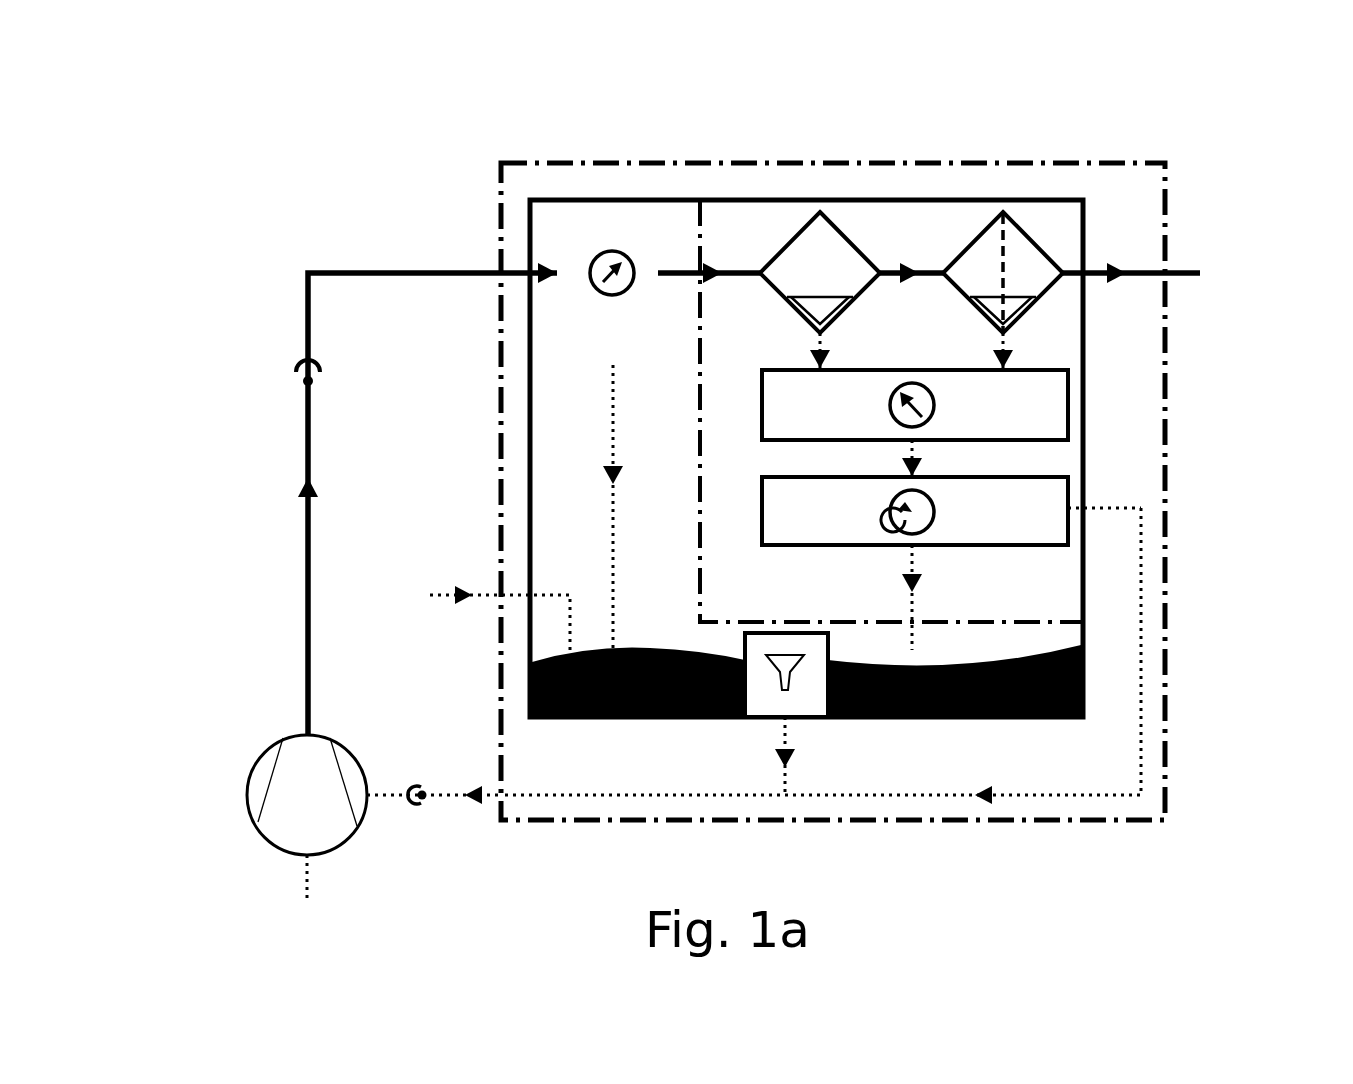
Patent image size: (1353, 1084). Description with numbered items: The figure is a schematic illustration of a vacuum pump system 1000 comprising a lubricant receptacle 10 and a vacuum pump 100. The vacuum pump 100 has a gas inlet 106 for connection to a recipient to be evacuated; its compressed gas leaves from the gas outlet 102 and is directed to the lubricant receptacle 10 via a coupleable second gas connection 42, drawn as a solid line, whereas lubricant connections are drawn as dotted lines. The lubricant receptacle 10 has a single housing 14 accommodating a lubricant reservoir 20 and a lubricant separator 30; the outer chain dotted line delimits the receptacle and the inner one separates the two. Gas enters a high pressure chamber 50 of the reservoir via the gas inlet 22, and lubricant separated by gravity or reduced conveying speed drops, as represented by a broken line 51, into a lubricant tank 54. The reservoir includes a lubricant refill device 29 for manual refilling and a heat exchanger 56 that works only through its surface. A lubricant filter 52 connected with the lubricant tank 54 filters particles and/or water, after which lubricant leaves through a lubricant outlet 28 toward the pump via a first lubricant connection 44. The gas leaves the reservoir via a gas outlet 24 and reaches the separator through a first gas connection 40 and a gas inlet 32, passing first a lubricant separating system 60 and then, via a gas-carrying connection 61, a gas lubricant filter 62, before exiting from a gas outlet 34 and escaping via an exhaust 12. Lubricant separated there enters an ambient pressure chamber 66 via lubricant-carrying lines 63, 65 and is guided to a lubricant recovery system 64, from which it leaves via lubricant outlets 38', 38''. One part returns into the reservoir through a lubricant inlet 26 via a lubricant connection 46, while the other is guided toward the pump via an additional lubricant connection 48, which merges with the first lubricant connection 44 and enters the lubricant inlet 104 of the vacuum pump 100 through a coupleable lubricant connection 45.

The vacuum pump system 1000 is at (200, 165).
The lubricant receptacle 10 is at (803, 120).
The exhaust 12 is at (1222, 218).
The housing 14 is at (690, 300).
The lubricant reservoir 20 is at (625, 218).
The gas inlet 22 is at (500, 232).
The gas outlet 24 is at (642, 272).
The lubricant inlet 26 is at (950, 614).
The lubricant outlet 28 is at (775, 720).
The lubricant refill device 29 is at (455, 592).
The lubricant separator 30 is at (905, 215).
The gas inlet 32 is at (738, 270).
The gas outlet 34 is at (1083, 278).
The lubricant outlet 38' is at (992, 455).
The lubricant outlet 38'' is at (1097, 519).
The first gas connection 40 is at (665, 270).
The second gas connection 42 is at (298, 363).
The first lubricant connection 44 is at (798, 740).
The coupleable lubricant connection 45 is at (420, 805).
The lubricant connection 46 is at (1100, 510).
The additional lubricant connection 48 is at (1143, 690).
The high pressure chamber 50 is at (574, 212).
The broken line 51 is at (600, 420).
The lubricant filter 52 is at (803, 694).
The lubricant tank 54 is at (1100, 640).
The heat exchanger 56 is at (1065, 650).
The lubricant separating system 60 is at (782, 250).
The gas-carrying connection 61 is at (900, 300).
The gas lubricant filter 62 is at (1010, 290).
The lubricant-carrying line 63 is at (855, 296).
The lubricant recovery system 64 is at (1060, 405).
The lubricant-carrying line 65 is at (1085, 298).
The ambient pressure chamber 66 is at (1012, 340).
The vacuum pump 100 is at (270, 835).
The gas outlet 102 is at (300, 737).
The lubricant inlet 104 is at (368, 812).
The gas inlet 106 is at (300, 858).